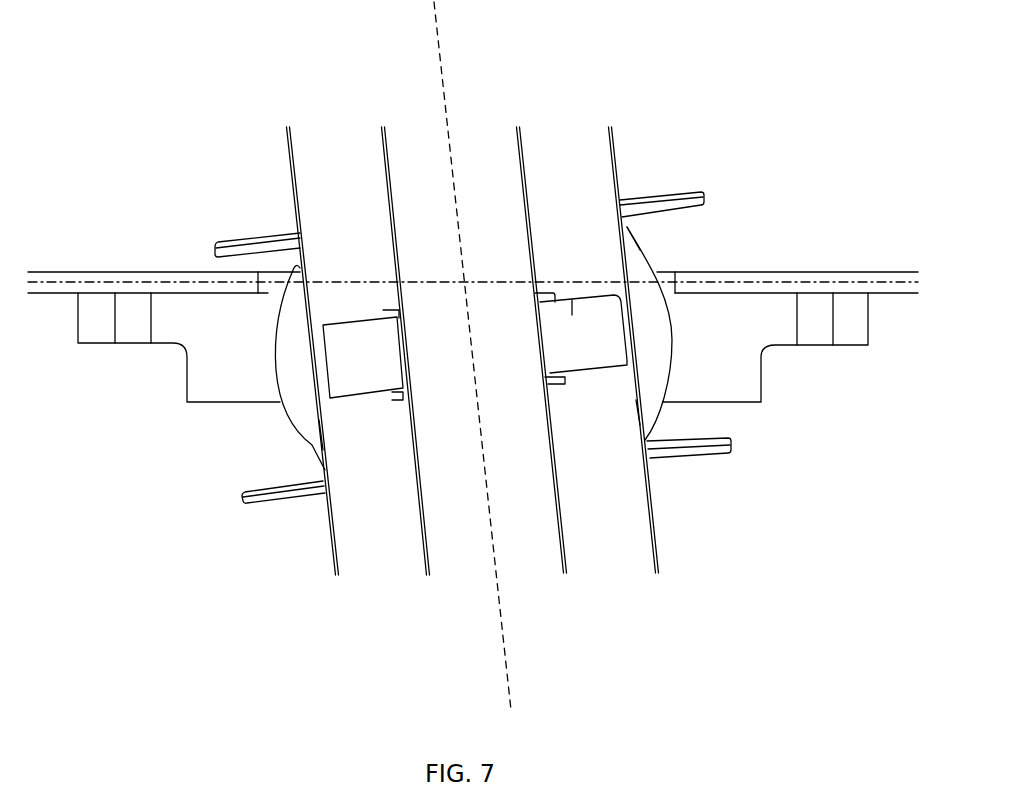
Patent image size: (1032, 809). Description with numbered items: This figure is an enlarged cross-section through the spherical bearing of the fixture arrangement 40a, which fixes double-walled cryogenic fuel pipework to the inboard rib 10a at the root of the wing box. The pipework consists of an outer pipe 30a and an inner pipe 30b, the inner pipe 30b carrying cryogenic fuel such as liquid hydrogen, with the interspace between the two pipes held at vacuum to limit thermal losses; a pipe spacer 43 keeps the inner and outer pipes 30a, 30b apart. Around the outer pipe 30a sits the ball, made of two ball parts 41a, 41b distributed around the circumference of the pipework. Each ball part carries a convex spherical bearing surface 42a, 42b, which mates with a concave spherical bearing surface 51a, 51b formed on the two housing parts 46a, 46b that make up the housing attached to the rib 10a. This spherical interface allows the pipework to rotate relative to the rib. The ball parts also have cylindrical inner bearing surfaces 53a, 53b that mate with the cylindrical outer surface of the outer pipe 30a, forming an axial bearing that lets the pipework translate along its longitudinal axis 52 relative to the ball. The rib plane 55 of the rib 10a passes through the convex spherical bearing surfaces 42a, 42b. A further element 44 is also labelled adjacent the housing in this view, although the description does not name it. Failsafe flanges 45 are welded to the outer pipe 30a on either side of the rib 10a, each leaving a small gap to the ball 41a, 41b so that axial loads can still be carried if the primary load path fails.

The inboard rib 10a is at (62, 282).
The rib plane 55 is at (830, 282).
The longitudinal axis 52 is at (438, 53).
The outer pipe 30a is at (332, 537).
The inner pipe 30b is at (563, 542).
The fixture arrangement 40a is at (248, 193).
The first ball part 41a is at (313, 443).
The second ball part 41b is at (637, 262).
The convex spherical bearing surface 42a is at (290, 422).
The convex spherical bearing surface 42b is at (667, 408).
The pipe spacer 43 is at (572, 315).
The clip 44 is at (392, 310).
The failsafe flange 45 is at (672, 194).
The first housing part 46a is at (232, 362).
The second housing part 46b is at (738, 352).
The concave spherical bearing surface 51a is at (285, 367).
The concave spherical bearing surface 51b is at (667, 358).
The inner bearing surface 53a is at (327, 433).
The inner bearing surface 53b is at (632, 412).